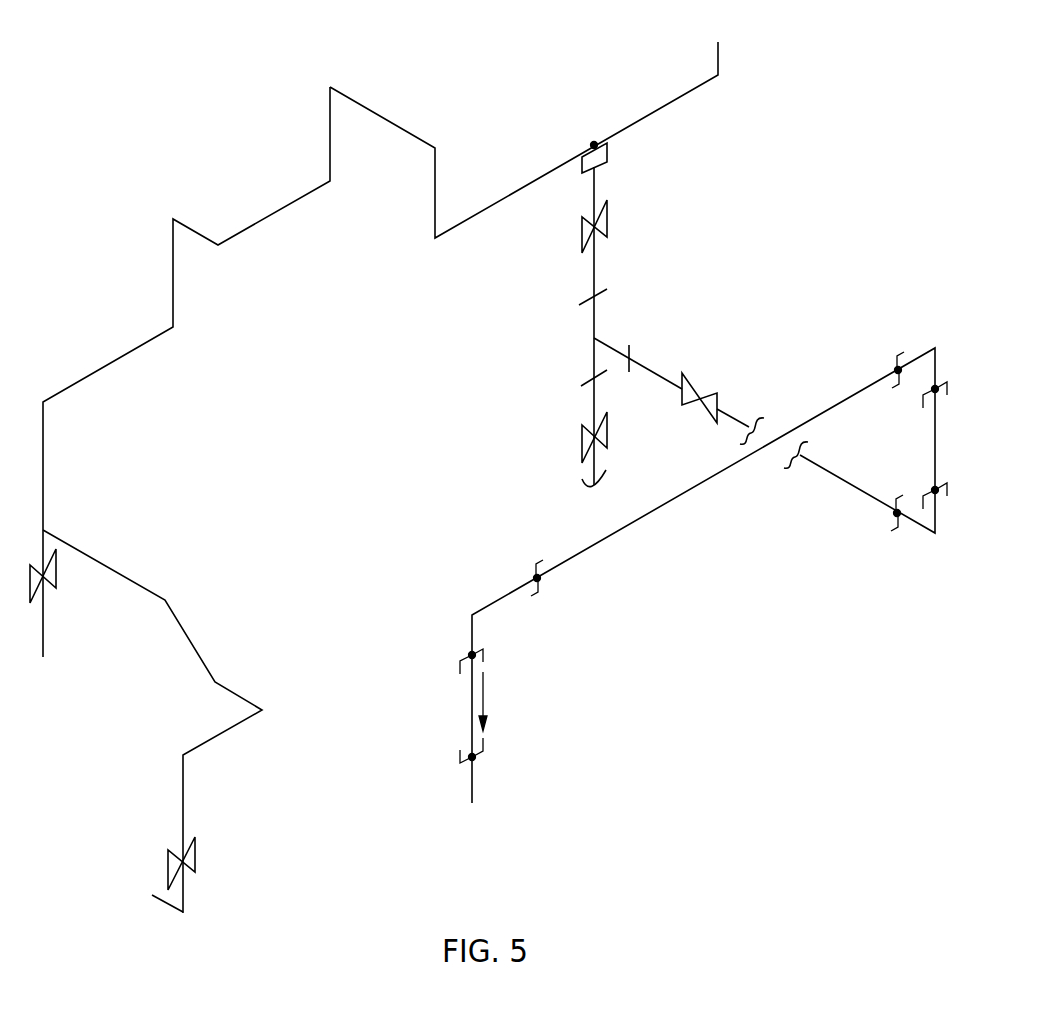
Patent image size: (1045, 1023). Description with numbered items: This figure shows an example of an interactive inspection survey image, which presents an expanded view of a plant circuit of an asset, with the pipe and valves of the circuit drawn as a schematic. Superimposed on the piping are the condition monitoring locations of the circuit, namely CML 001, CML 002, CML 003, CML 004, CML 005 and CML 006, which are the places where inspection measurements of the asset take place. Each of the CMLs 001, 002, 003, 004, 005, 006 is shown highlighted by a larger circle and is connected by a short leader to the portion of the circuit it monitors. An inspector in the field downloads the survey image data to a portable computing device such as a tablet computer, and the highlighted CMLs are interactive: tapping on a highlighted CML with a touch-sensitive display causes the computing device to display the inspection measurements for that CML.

The condition monitoring location 001 is at (197, 897).
The condition monitoring location 002 is at (168, 800).
The condition monitoring location 003 is at (186, 311).
The condition monitoring location 004 is at (458, 205).
The condition monitoring location 005 is at (559, 147).
The condition monitoring location 006 is at (729, 467).